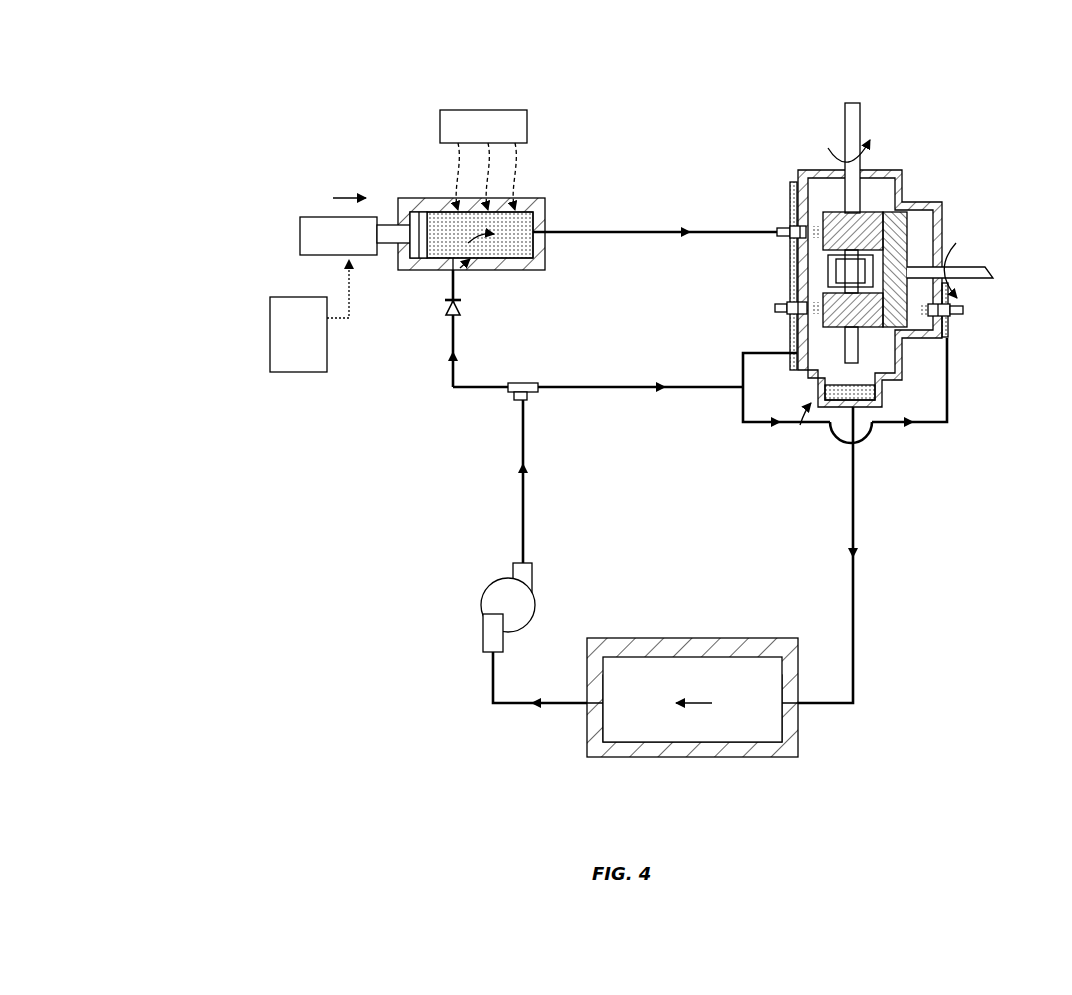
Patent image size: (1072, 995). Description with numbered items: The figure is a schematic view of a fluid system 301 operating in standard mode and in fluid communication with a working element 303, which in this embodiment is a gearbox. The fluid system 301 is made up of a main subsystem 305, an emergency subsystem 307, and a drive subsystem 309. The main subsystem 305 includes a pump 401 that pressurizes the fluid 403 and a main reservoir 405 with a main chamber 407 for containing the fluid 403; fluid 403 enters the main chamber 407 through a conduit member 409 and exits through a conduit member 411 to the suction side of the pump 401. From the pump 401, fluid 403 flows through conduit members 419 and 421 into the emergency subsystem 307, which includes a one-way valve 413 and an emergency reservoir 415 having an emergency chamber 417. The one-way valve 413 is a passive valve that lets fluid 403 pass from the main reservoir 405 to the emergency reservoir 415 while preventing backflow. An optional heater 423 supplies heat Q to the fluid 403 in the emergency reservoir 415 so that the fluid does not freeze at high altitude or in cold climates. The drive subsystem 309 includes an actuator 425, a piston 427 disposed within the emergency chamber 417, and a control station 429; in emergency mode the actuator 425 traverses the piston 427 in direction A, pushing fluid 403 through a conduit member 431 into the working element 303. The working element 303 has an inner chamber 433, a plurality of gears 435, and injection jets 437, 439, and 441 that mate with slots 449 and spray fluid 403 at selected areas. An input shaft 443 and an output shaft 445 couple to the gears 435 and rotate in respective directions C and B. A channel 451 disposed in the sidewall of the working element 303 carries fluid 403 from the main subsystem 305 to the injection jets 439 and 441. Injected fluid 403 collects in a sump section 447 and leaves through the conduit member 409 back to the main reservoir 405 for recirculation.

The fluid system 301 is at (162, 102).
The working element 303 is at (970, 103).
The main subsystem 305 is at (445, 740).
The emergency subsystem 307 is at (562, 125).
The drive subsystem 309 is at (205, 252).
The pump 401 is at (535, 585).
The fluid 403 is at (512, 258).
The main reservoir 405 is at (745, 638).
The main chamber 407 is at (688, 647).
The conduit member 409 is at (858, 590).
The conduit member 411 is at (497, 690).
The one-way valve 413 is at (446, 310).
The emergency reservoir 415 is at (547, 200).
The emergency chamber 417 is at (478, 268).
The conduit member 419 is at (532, 500).
The conduit member 421 is at (448, 366).
The heater 423 is at (440, 122).
The actuator 425 is at (318, 217).
The piston 427 is at (386, 243).
The control station 429 is at (270, 340).
The conduit member 431 is at (645, 234).
The inner chamber 433 is at (800, 200).
The gears 435 is at (888, 203).
The injection jet 437 is at (778, 232).
The injection jet 439 is at (775, 310).
The injection jet 441 is at (965, 311).
The input shaft 443 is at (845, 110).
The output shaft 445 is at (988, 268).
The sump section 447 is at (800, 423).
The slots 449 is at (512, 399).
The channel 451 is at (790, 295).
The direction of piston travel A is at (343, 197).
The rotation direction of output shaft B is at (958, 243).
The rotation direction of input shaft C is at (828, 148).
The heat Q is at (452, 178).